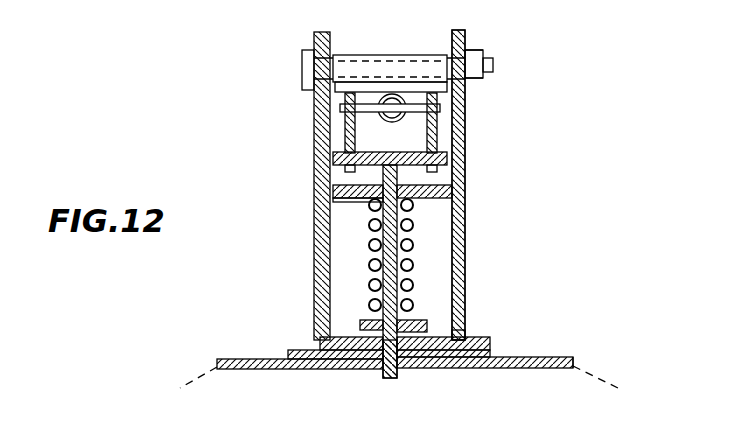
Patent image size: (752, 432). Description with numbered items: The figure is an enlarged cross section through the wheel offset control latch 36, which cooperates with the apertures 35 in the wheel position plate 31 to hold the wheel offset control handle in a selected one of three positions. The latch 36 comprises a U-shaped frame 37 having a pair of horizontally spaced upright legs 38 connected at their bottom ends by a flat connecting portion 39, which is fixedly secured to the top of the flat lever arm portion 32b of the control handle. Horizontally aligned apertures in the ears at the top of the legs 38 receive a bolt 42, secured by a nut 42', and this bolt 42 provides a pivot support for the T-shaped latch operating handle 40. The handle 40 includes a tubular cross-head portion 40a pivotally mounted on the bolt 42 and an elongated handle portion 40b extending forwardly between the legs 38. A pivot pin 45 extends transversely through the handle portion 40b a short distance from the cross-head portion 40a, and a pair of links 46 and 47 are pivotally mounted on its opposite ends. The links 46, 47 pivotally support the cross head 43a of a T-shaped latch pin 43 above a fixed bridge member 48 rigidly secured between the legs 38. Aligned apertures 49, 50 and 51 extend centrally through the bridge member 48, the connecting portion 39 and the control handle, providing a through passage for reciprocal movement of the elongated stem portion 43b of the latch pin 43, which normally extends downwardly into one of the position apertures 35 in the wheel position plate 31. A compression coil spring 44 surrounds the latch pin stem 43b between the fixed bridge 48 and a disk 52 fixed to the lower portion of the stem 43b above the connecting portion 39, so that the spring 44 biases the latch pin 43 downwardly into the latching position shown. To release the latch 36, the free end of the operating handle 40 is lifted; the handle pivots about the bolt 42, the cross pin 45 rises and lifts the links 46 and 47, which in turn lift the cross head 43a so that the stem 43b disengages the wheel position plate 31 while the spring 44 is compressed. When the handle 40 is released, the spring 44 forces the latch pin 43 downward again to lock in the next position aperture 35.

The wheel position plate 31 is at (580, 360).
The flat lever arm portion 32b is at (492, 356).
The apertures 35 is at (443, 388).
The wheel offset control latch 36 is at (614, 58).
The U-shaped frame 37 is at (466, 260).
The upright legs 38 is at (451, 42).
The flat connecting portion 39 is at (466, 340).
The latch operating handle 40 is at (462, 92).
The tubular cross-head portion 40a is at (357, 60).
The elongated handle portion 40b is at (450, 116).
The bolt 42 is at (509, 60).
The nut 42' is at (495, 40).
The T-shaped latch pin 43 is at (385, 376).
The cross head 43a is at (462, 166).
The elongated stem portion 43b is at (420, 282).
The compression coil spring 44 is at (415, 226).
The pivot pin 45 is at (345, 112).
The link 46 is at (345, 140).
The link 47 is at (440, 148).
The fixed bridge member 48 is at (345, 193).
The aperture 49 is at (345, 202).
The aperture 50 is at (376, 344).
The aperture 51 is at (322, 361).
The disk 52 is at (366, 325).